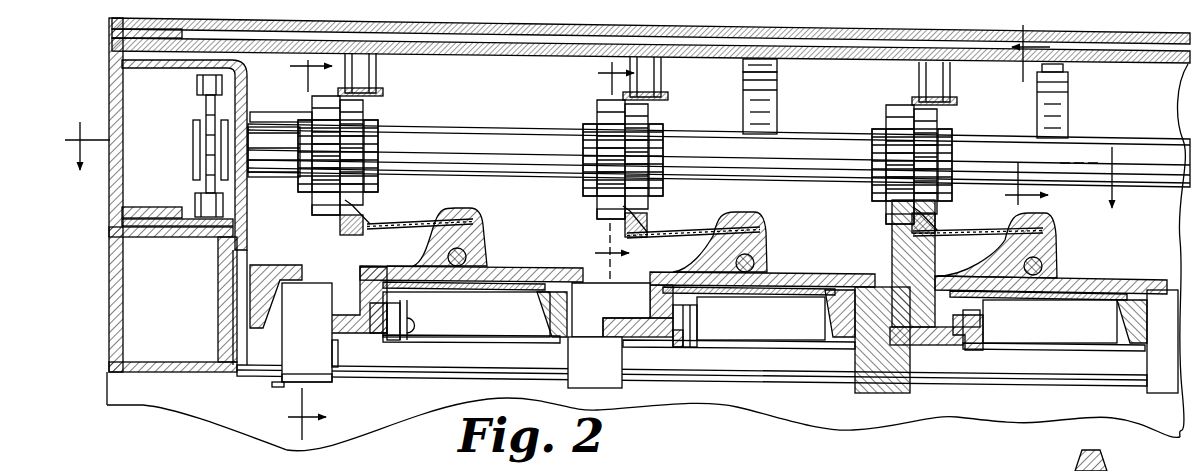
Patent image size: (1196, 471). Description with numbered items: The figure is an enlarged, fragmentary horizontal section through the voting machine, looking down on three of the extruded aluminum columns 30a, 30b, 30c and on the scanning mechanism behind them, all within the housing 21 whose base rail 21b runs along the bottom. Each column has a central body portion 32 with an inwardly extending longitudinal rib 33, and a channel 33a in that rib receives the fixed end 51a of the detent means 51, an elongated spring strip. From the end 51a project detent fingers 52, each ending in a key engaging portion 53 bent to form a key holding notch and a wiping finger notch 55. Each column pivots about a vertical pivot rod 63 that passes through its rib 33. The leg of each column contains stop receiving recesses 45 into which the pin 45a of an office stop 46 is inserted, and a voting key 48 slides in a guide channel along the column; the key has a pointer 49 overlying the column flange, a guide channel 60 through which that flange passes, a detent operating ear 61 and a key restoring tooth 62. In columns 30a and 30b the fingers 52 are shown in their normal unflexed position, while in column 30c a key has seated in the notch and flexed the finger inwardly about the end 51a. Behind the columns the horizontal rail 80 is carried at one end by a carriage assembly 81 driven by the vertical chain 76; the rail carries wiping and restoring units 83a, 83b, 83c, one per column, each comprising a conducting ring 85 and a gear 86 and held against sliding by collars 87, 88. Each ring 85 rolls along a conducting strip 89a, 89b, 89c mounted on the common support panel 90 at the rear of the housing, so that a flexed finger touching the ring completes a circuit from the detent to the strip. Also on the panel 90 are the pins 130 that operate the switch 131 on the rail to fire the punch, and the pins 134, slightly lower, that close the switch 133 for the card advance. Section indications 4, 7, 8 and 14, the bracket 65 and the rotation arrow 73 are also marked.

The section line 4- 4 is at (598, 153).
The section line 7- 7 is at (608, 172).
The section line 8- 8 is at (306, 250).
The section line 14- 14 is at (1016, 115).
The housing 21 is at (110, 282).
The frame base rail 21b is at (765, 370).
The column 30a is at (509, 268).
The column 30b is at (795, 264).
The column 30c is at (1088, 262).
The central body portion 32 is at (561, 267).
The longitudinal rib 33 is at (477, 228).
The channel 33a is at (467, 212).
The stop receiving recesses 45 is at (646, 300).
The pin 45a is at (655, 338).
The office stop 46 is at (566, 346).
The voting key 48 is at (280, 381).
The pointer 49 is at (409, 338).
The detent means 51 is at (447, 216).
The end 51a is at (433, 242).
The detent finger 52 is at (400, 224).
The key engaging portion 53 is at (328, 238).
The wiping finger notch 55 is at (378, 216).
The guide channel 60 is at (326, 310).
The detent operating ear 61 is at (928, 263).
The key restoring tooth 62 is at (313, 212).
The pivot rod 63 is at (475, 251).
The bracket 65 is at (284, 268).
The direction of rotation 73 is at (456, 113).
The chain 76 is at (200, 88).
The horizontal rail 80 is at (508, 148).
The carriage assembly 81 is at (245, 114).
The wiping and restoring unit 83a is at (378, 154).
The wiping and restoring unit 83b is at (656, 151).
The wiping and restoring unit 83c is at (949, 152).
The conducting ring 85 is at (345, 102).
The gear 86 is at (313, 197).
The collar 87 is at (345, 120).
The collar 88 is at (306, 112).
The conducting strip 89a is at (375, 88).
The conducting strip 89b is at (664, 99).
The conducting strip 89c is at (952, 101).
The support panel 90 is at (548, 42).
The pin 130 is at (778, 77).
The switch 131 is at (778, 100).
The switch 133 is at (1062, 103).
The pin 134 is at (1066, 80).